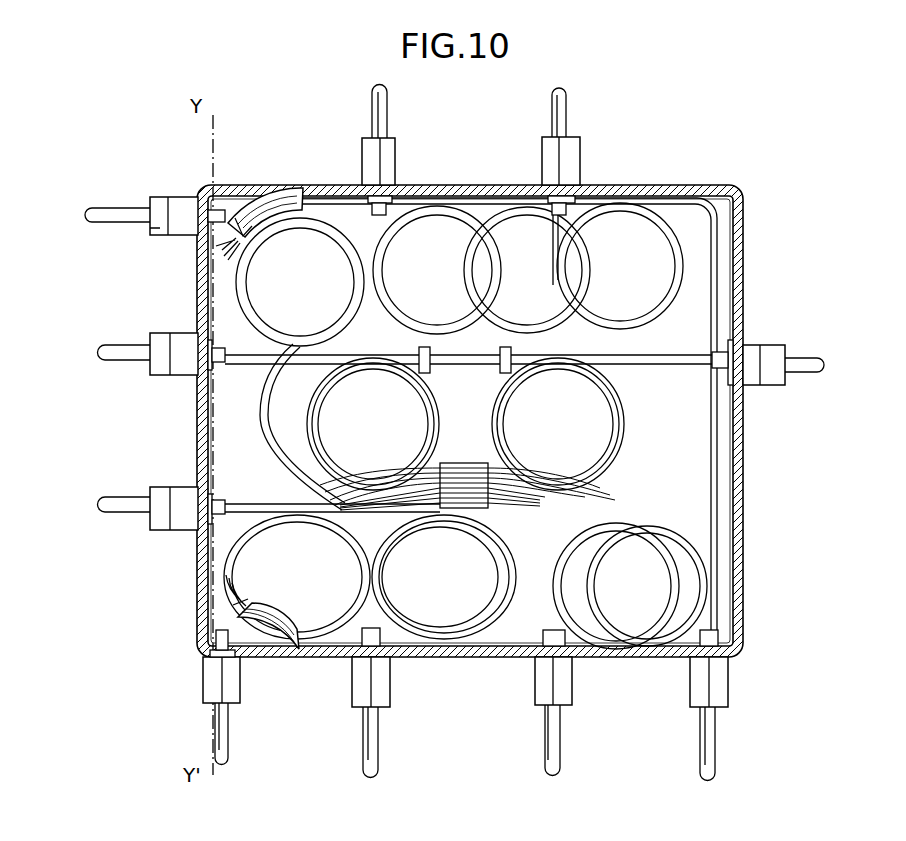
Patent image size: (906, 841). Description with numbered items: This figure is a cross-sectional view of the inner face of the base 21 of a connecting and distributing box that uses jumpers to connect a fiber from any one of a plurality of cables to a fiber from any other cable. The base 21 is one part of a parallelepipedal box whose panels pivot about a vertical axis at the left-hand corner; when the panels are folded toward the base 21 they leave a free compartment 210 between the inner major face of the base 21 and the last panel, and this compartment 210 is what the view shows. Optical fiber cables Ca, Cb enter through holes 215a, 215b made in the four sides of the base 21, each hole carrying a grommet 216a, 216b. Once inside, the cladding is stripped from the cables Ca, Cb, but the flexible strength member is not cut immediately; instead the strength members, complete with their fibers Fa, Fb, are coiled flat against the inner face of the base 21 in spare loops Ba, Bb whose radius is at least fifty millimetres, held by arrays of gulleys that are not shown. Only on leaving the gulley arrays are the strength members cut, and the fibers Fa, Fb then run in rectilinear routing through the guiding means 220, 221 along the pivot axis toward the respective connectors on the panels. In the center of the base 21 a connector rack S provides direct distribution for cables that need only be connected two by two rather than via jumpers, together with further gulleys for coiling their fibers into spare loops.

The base 21 is at (743, 490).
The free compartment 210 is at (664, 472).
The guiding means 220 is at (276, 622).
The guiding means 221 is at (300, 198).
The hole 215a is at (206, 652).
The hole 215b is at (548, 188).
The grommet 216a is at (202, 686).
The grommet 216b is at (582, 160).
The connector rack S is at (468, 463).
The optical fiber cable Ca is at (118, 209).
The optical fiber cable Cb is at (548, 108).
The optical fiber Fa is at (227, 585).
The optical fiber Fb is at (226, 248).
The spare loop Ba is at (496, 594).
The spare loop Bb is at (628, 326).